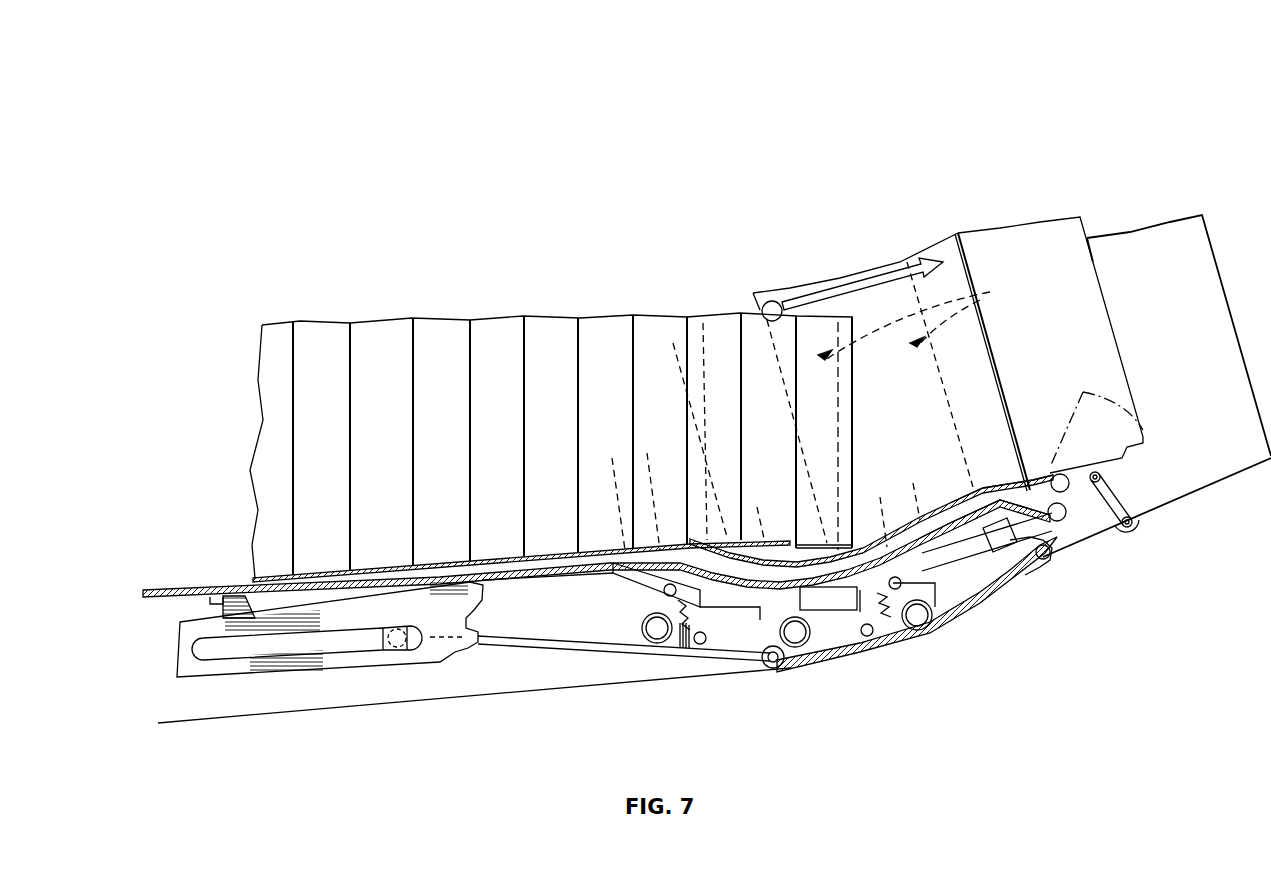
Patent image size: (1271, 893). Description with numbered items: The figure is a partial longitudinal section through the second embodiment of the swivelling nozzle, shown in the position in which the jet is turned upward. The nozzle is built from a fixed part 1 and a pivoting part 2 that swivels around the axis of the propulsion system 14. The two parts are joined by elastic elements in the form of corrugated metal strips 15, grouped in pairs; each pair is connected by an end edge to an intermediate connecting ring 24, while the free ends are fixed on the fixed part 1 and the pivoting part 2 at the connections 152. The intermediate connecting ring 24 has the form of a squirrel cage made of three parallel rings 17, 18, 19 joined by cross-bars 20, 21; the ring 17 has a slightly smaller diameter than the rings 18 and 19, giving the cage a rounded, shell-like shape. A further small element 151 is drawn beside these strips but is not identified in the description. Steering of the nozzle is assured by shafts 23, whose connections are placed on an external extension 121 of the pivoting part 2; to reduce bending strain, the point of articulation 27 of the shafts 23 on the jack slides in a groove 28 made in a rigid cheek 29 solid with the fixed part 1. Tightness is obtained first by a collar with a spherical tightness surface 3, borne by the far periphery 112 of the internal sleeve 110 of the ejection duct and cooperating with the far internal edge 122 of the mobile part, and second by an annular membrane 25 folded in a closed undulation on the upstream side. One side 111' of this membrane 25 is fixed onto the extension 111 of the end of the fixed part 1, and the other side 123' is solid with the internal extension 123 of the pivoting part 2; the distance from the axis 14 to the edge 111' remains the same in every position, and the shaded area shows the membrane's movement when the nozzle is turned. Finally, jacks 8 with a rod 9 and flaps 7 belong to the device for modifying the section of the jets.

The fixed part 1 is at (247, 592).
The pivoting part 2 is at (1007, 473).
The spherical tightness surface 3 is at (700, 545).
The flaps 7 is at (1222, 486).
The jacks 8 is at (967, 550).
The rod 9 is at (1112, 497).
The axis of the propulsion system 14 is at (770, 300).
The corrugated metal strips 15 is at (678, 650).
The ring 17 is at (650, 628).
The ring 18 is at (815, 655).
The ring 19 is at (918, 616).
The cross-bar 20 is at (738, 636).
The cross-bar 21 is at (848, 640).
The shafts 23 is at (577, 652).
The intermediate connecting ring 24 is at (860, 667).
The annular membrane 25 is at (975, 300).
The point of articulation 27 is at (400, 645).
The groove 28 is at (237, 653).
The rigid cheek 29 is at (347, 663).
The internal sleeve 110 is at (350, 567).
The extension 111 is at (768, 434).
The side of the membrane 111' is at (873, 436).
The far periphery 112 is at (850, 548).
The external extension 121 is at (818, 668).
The far internal edge 122 is at (960, 497).
The internal extension 123 is at (1006, 448).
The side of the membrane 123' is at (916, 374).
The guide roller 151 is at (700, 644).
The connections 152 is at (660, 590).